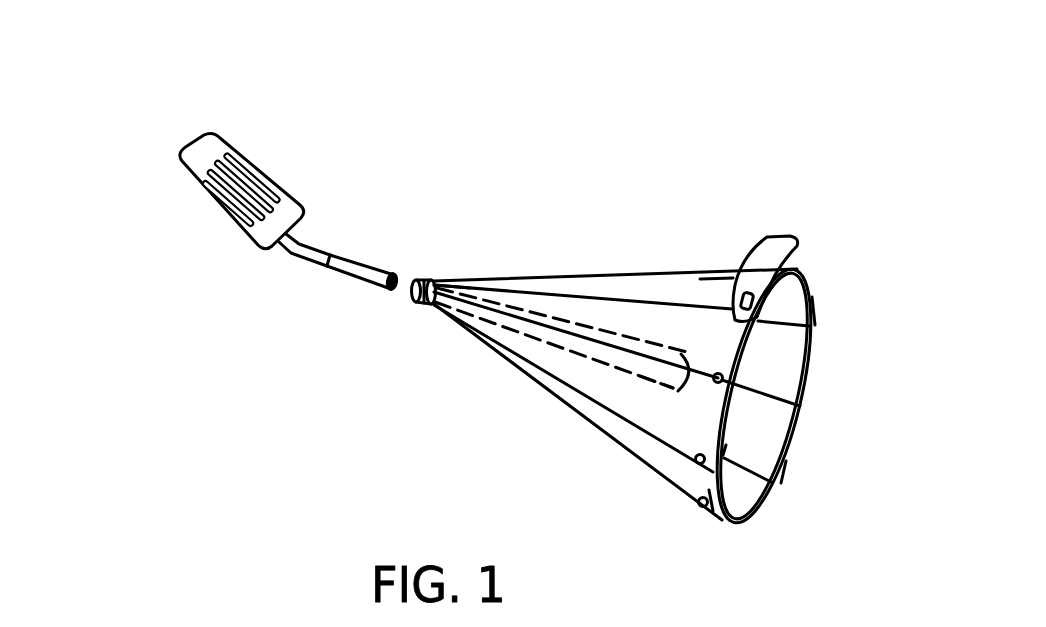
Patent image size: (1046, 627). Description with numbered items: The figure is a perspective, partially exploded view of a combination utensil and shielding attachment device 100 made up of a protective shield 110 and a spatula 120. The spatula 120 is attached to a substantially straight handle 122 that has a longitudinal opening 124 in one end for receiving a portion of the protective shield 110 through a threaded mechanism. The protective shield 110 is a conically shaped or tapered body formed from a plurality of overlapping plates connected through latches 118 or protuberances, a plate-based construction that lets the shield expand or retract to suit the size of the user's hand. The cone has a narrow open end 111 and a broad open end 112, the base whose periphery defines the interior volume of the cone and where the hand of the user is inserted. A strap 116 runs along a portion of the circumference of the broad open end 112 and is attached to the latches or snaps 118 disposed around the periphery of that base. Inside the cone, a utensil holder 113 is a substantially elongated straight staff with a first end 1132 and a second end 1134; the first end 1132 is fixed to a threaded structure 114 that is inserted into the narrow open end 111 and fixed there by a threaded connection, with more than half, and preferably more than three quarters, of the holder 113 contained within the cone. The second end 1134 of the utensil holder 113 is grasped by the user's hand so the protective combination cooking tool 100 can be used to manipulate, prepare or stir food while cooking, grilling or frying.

The combination utensil and shielding attachment device 100 is at (528, 236).
The protective shield 110 is at (610, 427).
The narrow open end 111 is at (473, 280).
The broad open end 112 is at (732, 276).
The utensil holder 113 is at (520, 330).
The first end 1132 is at (441, 289).
The second end 1134 is at (663, 380).
The threaded structure 114 is at (418, 284).
The strap 116 is at (775, 242).
The latches 118 is at (722, 376).
The spatula 120 is at (207, 197).
The handle 122 is at (350, 267).
The longitudinal opening 124 is at (396, 284).